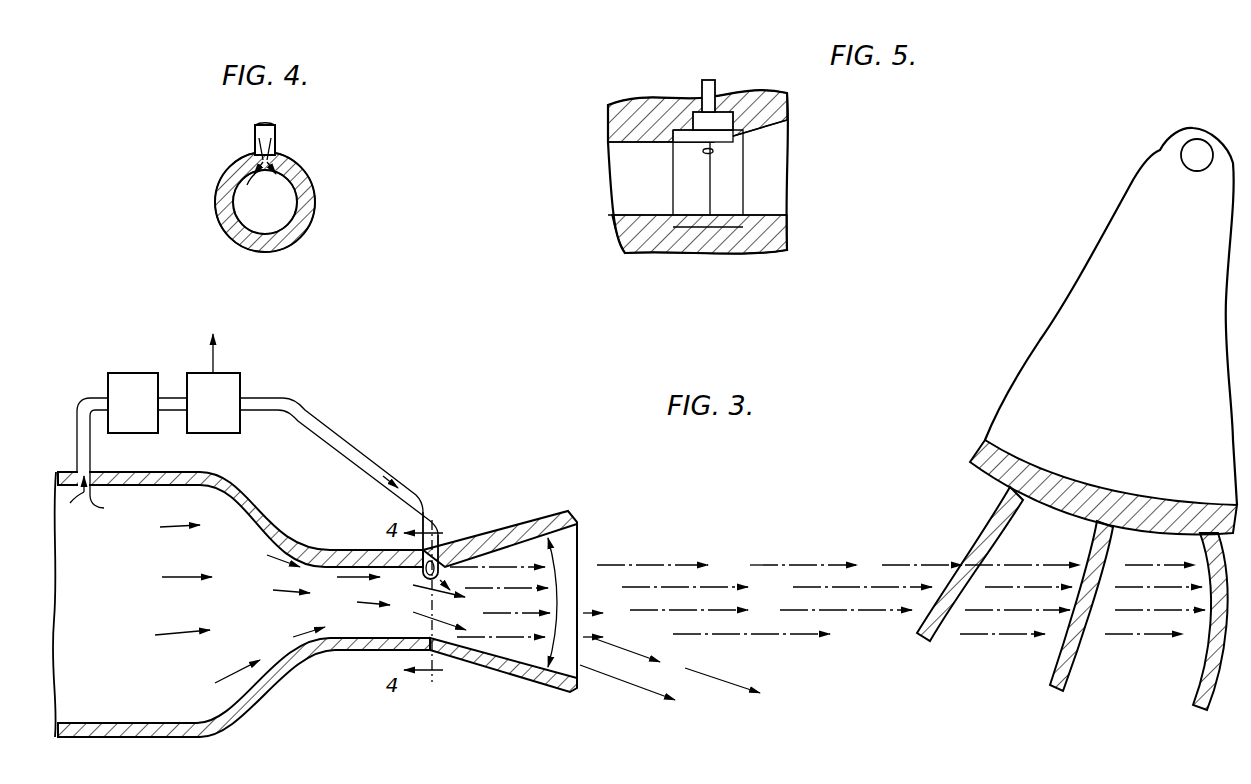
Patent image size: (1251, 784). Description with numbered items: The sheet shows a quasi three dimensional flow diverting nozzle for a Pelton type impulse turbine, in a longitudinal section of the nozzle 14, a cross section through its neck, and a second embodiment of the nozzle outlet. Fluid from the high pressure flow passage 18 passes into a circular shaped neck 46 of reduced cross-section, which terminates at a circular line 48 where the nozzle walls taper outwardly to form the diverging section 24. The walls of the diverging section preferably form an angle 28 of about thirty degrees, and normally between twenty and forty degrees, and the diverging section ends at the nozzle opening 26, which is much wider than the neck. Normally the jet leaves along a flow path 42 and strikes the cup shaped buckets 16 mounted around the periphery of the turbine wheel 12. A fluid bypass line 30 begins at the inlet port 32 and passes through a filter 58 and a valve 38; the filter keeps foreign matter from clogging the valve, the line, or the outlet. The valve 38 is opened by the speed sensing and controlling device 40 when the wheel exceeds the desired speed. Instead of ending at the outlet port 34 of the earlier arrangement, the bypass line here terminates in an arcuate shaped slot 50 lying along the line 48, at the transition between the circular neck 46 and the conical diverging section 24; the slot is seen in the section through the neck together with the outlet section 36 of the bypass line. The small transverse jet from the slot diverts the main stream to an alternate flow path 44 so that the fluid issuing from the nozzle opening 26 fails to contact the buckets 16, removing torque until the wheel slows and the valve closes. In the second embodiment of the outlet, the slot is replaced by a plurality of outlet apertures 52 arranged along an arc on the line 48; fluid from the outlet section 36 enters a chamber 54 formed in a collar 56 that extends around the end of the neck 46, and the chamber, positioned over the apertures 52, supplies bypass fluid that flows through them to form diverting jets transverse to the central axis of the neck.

In FIG. 3, the turbine wheel 12 is at (1135, 344).
In FIG. 3, the nozzle 14 is at (530, 683).
In FIG. 3, the buckets 16 is at (945, 622).
In FIG. 3, the high pressure flow passage 18 is at (88, 695).
In FIG. 3, the diverging section 24 is at (531, 545).
In FIG. 3, the nozzle opening 26 is at (582, 530).
In FIG. 3, the angle 28 is at (554, 602).
In FIG. 3, the fluid bypass line 30 is at (92, 395).
In FIG. 3, the inlet port 32 is at (114, 507).
In FIG. 3, the outlet port 34 is at (449, 560).
In FIG. 4, the outlet section 36 is at (278, 135).
In FIG. 5, the outlet section 36 is at (716, 86).
In FIG. 3, the outlet section 36 is at (416, 512).
In FIG. 3, the valve 38 is at (242, 382).
In FIG. 3, the speed sensing and controlling device 40 is at (211, 342).
In FIG. 3, the flow path 42 is at (782, 562).
In FIG. 3, the alternate flow path 44 is at (706, 679).
In FIG. 4, the circular shaped neck 46 is at (284, 210).
In FIG. 5, the circular shaped neck 46 is at (642, 144).
In FIG. 3, the circular shaped neck 46 is at (393, 631).
In FIG. 5, the circular line 48 is at (712, 172).
In FIG. 3, the circular line 48 is at (437, 607).
In FIG. 4, the arcuate shaped slot 50 is at (238, 188).
In FIG. 3, the arcuate shaped slot 50 is at (424, 574).
In FIG. 5, the outlet apertures 52 is at (743, 163).
In FIG. 5, the chamber 54 is at (783, 98).
In FIG. 5, the collar 56 is at (694, 112).
In FIG. 3, the filter 58 is at (137, 372).